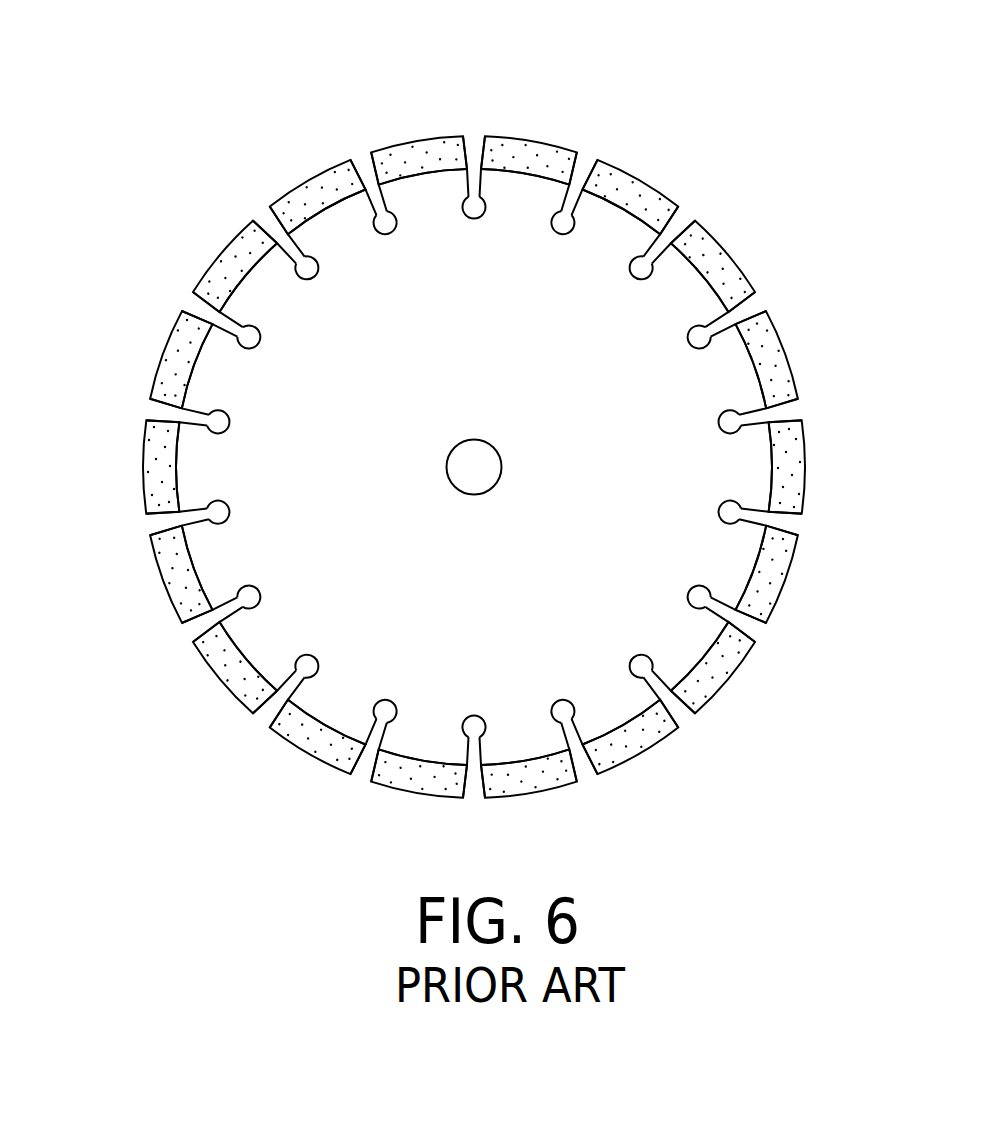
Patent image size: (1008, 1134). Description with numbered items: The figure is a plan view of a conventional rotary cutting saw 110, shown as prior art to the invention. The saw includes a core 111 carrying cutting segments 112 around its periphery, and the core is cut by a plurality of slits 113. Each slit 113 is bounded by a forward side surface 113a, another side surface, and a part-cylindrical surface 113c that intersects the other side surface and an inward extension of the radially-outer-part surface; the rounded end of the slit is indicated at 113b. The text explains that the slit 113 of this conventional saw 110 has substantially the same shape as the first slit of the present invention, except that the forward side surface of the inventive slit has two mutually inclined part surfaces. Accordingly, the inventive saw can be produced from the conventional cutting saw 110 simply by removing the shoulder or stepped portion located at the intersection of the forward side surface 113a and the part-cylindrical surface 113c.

The conventional rotary cutting saw 110 is at (404, 139).
The core (base plate) 111 is at (718, 378).
The diamond segment 112 is at (643, 192).
The slit 113 is at (653, 253).
The forward side surface 113a is at (660, 685).
The circular end portion of slit 113b is at (652, 260).
The part-cylindrical surface 113c is at (574, 224).